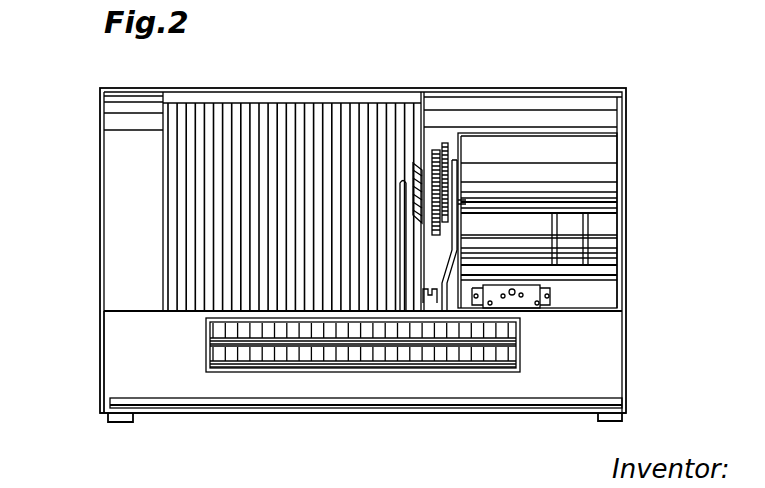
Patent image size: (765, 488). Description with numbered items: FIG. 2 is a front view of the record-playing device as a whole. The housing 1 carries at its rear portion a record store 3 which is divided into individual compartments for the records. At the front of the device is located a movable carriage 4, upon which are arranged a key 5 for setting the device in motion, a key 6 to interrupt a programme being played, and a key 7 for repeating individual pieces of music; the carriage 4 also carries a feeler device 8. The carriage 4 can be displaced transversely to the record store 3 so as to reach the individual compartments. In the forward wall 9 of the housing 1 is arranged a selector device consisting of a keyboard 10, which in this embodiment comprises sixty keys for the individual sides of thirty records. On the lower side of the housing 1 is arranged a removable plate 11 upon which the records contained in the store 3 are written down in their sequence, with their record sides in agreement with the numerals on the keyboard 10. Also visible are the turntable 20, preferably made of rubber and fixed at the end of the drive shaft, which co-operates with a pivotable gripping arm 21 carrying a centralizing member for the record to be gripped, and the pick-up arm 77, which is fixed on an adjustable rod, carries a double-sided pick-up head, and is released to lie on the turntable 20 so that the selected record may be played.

The housing 1 is at (104, 217).
The record store 3 is at (240, 130).
The movable carriage 4 is at (565, 175).
The key 5 is at (598, 230).
The key 6 is at (578, 248).
The key 7 is at (533, 241).
The feeler device 8 is at (540, 300).
The forward wall 9 is at (122, 352).
The keyboard 10 is at (338, 366).
The removable plate 11 is at (237, 403).
The turntable 20 is at (440, 150).
The pivotable gripping arm 21 is at (400, 178).
The pick-up arm 77 is at (458, 202).